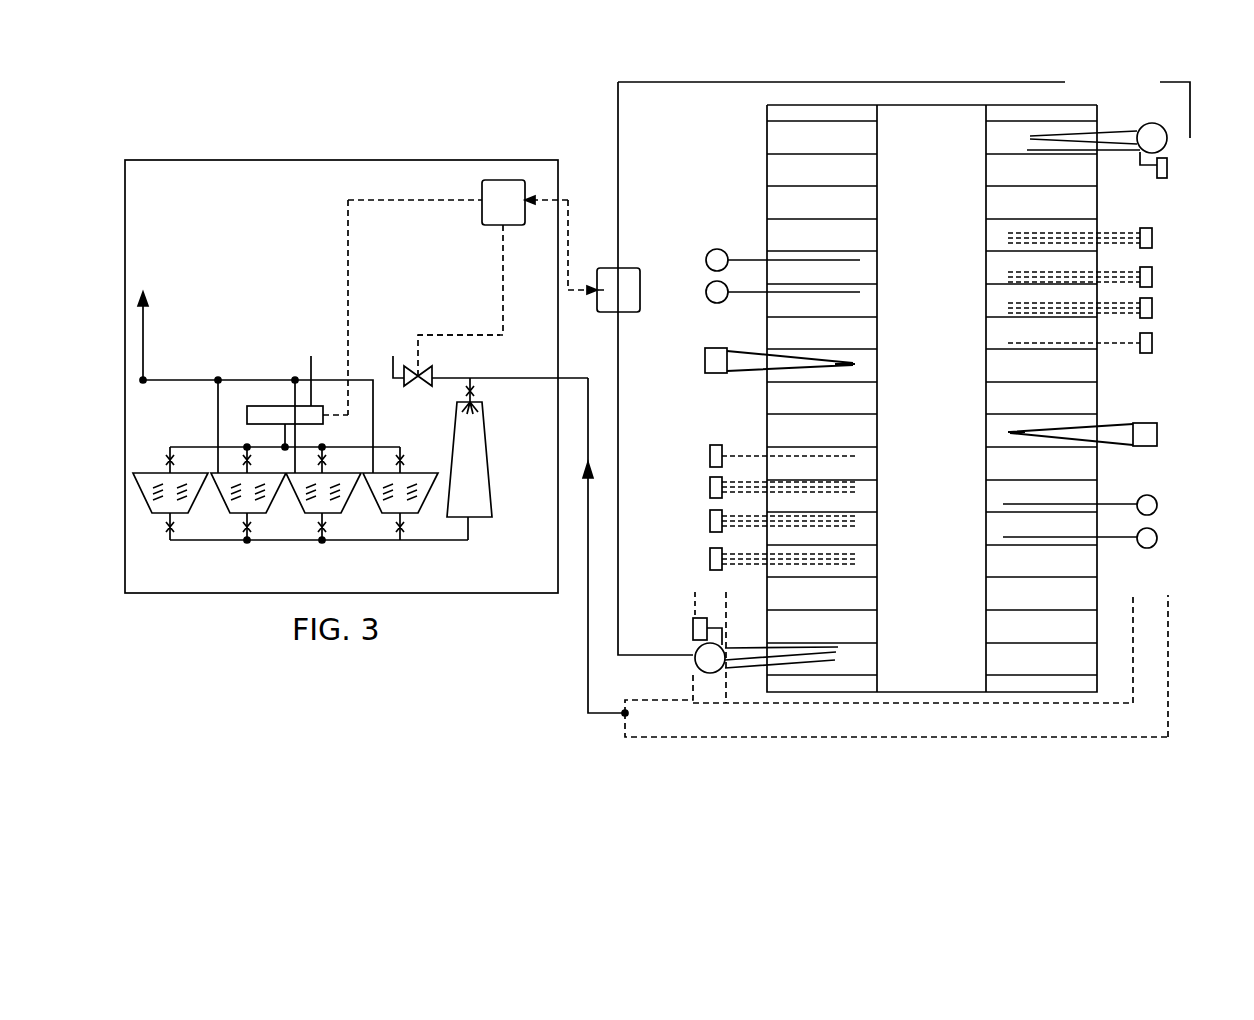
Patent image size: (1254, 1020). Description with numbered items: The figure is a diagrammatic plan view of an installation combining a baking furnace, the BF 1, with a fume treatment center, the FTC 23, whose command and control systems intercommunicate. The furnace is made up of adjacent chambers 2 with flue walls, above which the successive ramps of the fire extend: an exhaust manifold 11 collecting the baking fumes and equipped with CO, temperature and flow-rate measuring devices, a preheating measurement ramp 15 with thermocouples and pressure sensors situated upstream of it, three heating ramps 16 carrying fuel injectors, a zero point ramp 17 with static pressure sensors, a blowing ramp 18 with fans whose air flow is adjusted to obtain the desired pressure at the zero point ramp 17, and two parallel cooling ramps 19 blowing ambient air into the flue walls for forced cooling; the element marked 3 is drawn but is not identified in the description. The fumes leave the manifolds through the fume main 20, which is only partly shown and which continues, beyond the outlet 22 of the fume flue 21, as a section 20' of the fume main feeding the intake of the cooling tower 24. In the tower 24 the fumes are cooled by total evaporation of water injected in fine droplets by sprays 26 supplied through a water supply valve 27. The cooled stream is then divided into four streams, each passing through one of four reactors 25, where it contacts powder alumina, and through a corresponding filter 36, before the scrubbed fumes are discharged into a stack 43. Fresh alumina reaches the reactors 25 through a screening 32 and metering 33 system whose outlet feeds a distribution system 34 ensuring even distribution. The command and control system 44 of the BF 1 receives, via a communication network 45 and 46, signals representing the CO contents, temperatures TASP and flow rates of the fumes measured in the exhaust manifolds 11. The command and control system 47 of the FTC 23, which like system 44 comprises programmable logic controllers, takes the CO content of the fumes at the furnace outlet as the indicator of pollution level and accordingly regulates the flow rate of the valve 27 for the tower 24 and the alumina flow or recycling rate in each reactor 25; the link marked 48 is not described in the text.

The baking furnace (BF) 1 is at (662, 78).
The chamber 2 is at (945, 398).
The tube rows 3 is at (847, 186).
The exhaust manifold 11 is at (1160, 137).
The preheating measurement ramp 15 is at (1168, 172).
The heating ramp 16 is at (1152, 308).
The zero point ramp 17 is at (1152, 343).
The blowing ramp 18 is at (1157, 435).
The cooling ramp 19 is at (1157, 538).
The fume main 20 is at (933, 656).
The section of the fume main 20' is at (579, 545).
The fume flue 21 is at (900, 706).
The outlet of the fume flue 22 is at (624, 716).
The fume treatment center (FTC) 23 is at (162, 160).
The cooling tower 24 is at (488, 455).
The reactor 25 is at (300, 514).
The filter 36 is at (246, 514).
The spray 26 is at (478, 400).
The water supply valve 27 is at (418, 386).
The screening system 32 is at (284, 391).
The metering system 33 is at (262, 406).
The distribution system 34 is at (381, 447).
The stack 43 is at (147, 330).
The command and control system of the BF 44 is at (628, 268).
The communication network 45 is at (968, 82).
The communication network 46 is at (618, 414).
The command and control system of the FTC 47 is at (510, 180).
The signal line 48 is at (568, 200).